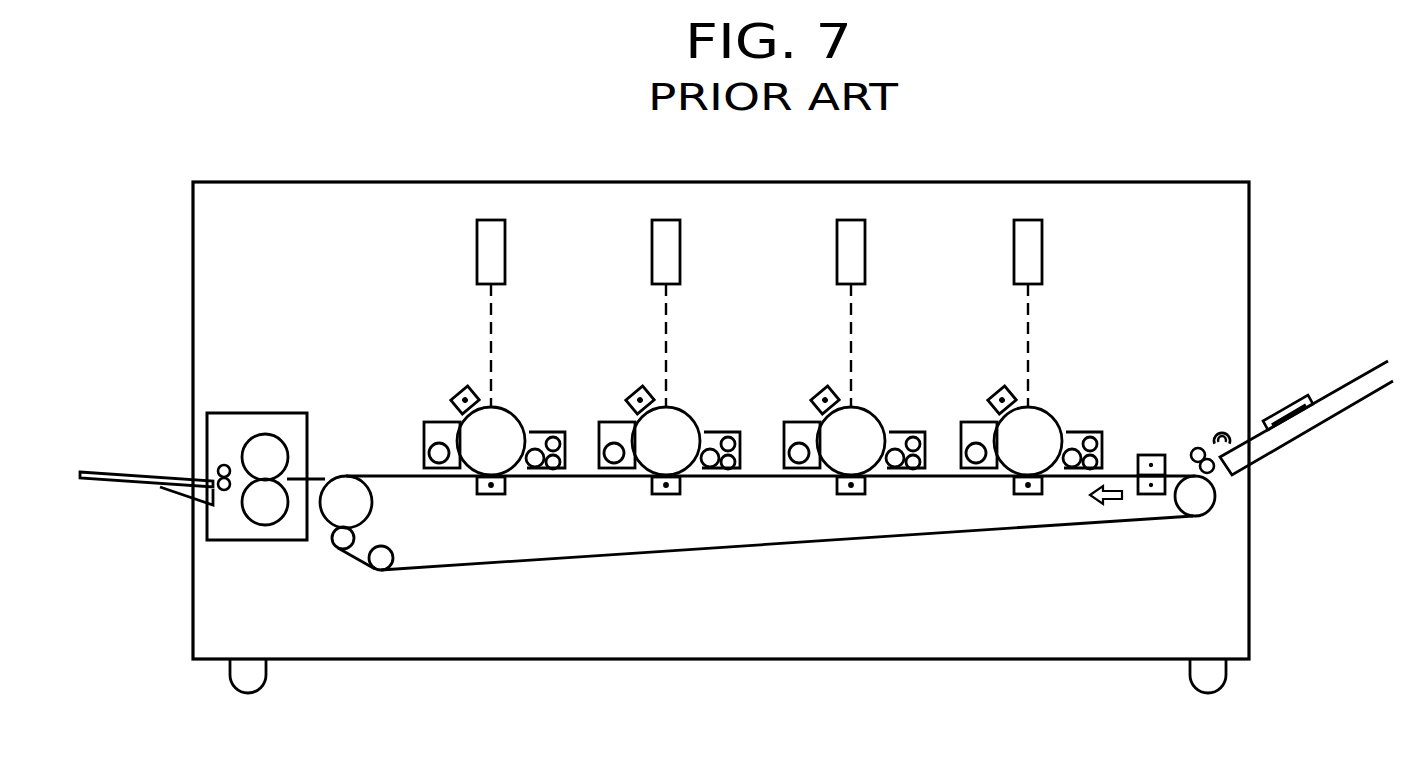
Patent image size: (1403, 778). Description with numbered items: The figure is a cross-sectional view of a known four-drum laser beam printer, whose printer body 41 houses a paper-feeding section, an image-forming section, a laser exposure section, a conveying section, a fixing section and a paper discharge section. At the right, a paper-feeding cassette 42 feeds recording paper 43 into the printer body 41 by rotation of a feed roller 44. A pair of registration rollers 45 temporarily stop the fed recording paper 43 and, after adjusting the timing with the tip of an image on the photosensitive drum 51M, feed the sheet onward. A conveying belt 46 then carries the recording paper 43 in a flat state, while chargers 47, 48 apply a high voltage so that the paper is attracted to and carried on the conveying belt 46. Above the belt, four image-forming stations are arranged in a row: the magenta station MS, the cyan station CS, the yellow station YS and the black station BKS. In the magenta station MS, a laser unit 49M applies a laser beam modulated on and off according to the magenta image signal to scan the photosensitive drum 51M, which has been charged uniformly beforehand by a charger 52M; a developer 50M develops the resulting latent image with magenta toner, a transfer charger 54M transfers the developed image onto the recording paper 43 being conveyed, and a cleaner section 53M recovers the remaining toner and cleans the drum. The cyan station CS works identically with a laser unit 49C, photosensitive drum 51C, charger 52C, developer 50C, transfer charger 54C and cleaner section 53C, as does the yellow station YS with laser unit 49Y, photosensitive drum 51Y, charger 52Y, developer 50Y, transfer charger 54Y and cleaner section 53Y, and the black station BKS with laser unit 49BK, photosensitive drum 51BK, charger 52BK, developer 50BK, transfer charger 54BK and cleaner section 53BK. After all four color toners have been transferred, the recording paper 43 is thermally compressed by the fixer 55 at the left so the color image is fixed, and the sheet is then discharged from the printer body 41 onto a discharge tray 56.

The printer body 41 is at (1182, 168).
The paper-feeding cassette 42 is at (1377, 395).
The recording paper 43 is at (1290, 412).
The feed roller 44 is at (1222, 430).
The registration rollers 45 is at (1197, 447).
The conveying belt 46 is at (1077, 527).
The charger 47 is at (1151, 455).
The charger 48 is at (1150, 497).
The laser unit 49BK is at (504, 232).
The laser unit 49Y is at (681, 232).
The laser unit 49C is at (866, 232).
The laser unit 49M is at (1043, 232).
The developer 50BK is at (547, 432).
The developer 50Y is at (720, 431).
The developer 50C is at (903, 431).
The developer 50M is at (1085, 431).
The photosensitive drum 51BK is at (499, 405).
The photosensitive drum 51Y is at (677, 406).
The photosensitive drum 51C is at (858, 406).
The photosensitive drum 51M is at (1037, 406).
The charger 52BK is at (465, 392).
The charger 52Y is at (647, 387).
The charger 52C is at (824, 388).
The charger 52M is at (995, 388).
The cleaner section 53BK is at (449, 423).
The cleaner section 53Y is at (616, 470).
The cleaner section 53C is at (798, 420).
The cleaner section 53M is at (988, 421).
The transfer charger 54BK is at (491, 497).
The transfer charger 54Y is at (669, 496).
The transfer charger 54C is at (840, 495).
The transfer charger 54M is at (1022, 494).
The fixer 55 is at (278, 410).
The discharge tray 56 is at (100, 470).
The black station BKS is at (557, 325).
The yellow station YS is at (755, 372).
The cyan station CS is at (905, 292).
The magenta station MS is at (1100, 293).